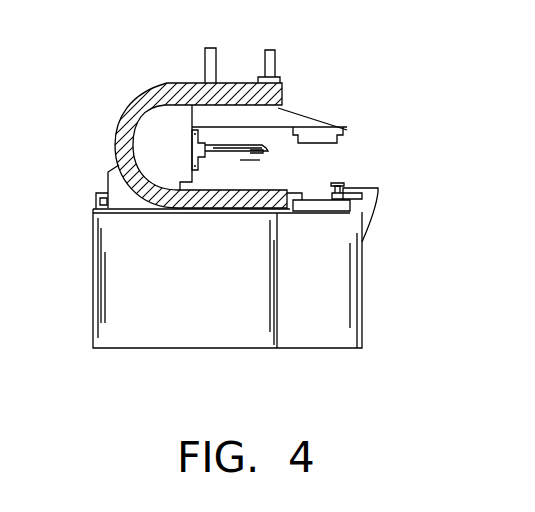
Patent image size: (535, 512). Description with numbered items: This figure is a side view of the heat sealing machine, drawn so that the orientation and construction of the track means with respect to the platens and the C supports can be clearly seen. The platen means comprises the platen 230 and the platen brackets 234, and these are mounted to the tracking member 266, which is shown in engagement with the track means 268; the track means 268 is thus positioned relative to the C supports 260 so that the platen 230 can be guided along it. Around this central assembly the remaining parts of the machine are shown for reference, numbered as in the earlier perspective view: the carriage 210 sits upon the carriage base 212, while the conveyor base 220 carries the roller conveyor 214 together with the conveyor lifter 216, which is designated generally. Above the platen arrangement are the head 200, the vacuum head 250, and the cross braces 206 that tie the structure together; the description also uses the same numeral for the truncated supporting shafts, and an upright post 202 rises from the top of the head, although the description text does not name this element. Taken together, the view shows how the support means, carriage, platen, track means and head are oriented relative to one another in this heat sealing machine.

The head 200 is at (300, 118).
The terminal post 202 is at (212, 64).
The cross braces 206 is at (280, 82).
The carriage 210 is at (113, 187).
The carriage base 212 is at (220, 340).
The roller conveyor 214 is at (318, 197).
The conveyor lifter 216 is at (373, 215).
The conveyor base 220 is at (322, 340).
The platen 230 is at (258, 154).
The platen brackets 234 is at (245, 166).
The vacuum head 250 is at (346, 130).
The C supports 260 is at (128, 133).
The tracking member 266 is at (248, 173).
The track means 268 is at (190, 148).